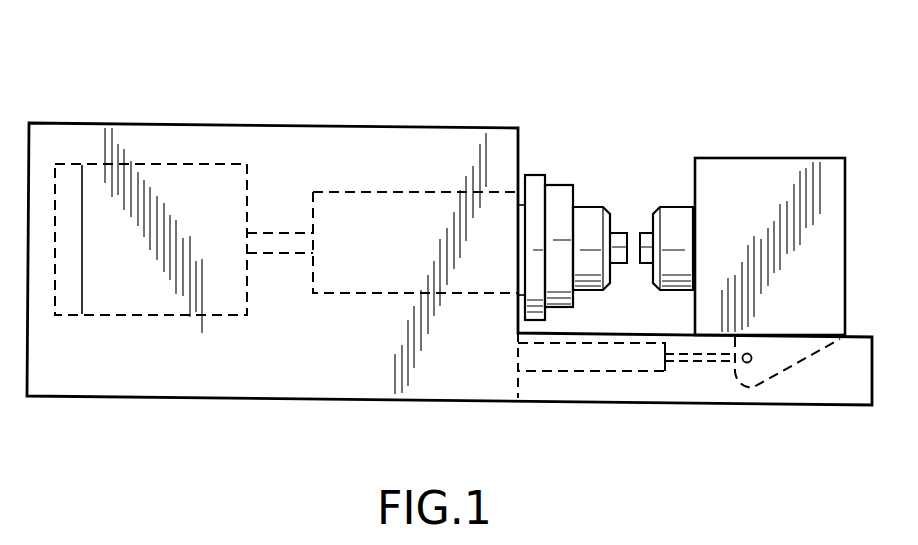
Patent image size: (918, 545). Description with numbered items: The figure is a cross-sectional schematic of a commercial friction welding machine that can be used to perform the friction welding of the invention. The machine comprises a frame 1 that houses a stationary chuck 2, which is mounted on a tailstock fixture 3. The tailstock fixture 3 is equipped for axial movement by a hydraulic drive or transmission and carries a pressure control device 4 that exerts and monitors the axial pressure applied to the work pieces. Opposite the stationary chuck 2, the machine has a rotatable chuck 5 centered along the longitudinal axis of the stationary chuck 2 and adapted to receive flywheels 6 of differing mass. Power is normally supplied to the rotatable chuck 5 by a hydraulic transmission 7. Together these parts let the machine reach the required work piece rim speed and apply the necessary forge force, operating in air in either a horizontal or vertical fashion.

The frame 1 is at (398, 95).
The stationary chuck 2 is at (686, 206).
The tailstock fixture 3 is at (750, 158).
The pressure control device 4 is at (610, 372).
The rotatable chuck 5 is at (586, 206).
The flywheel 6 is at (530, 174).
The hydraulic transmission 7 is at (180, 164).